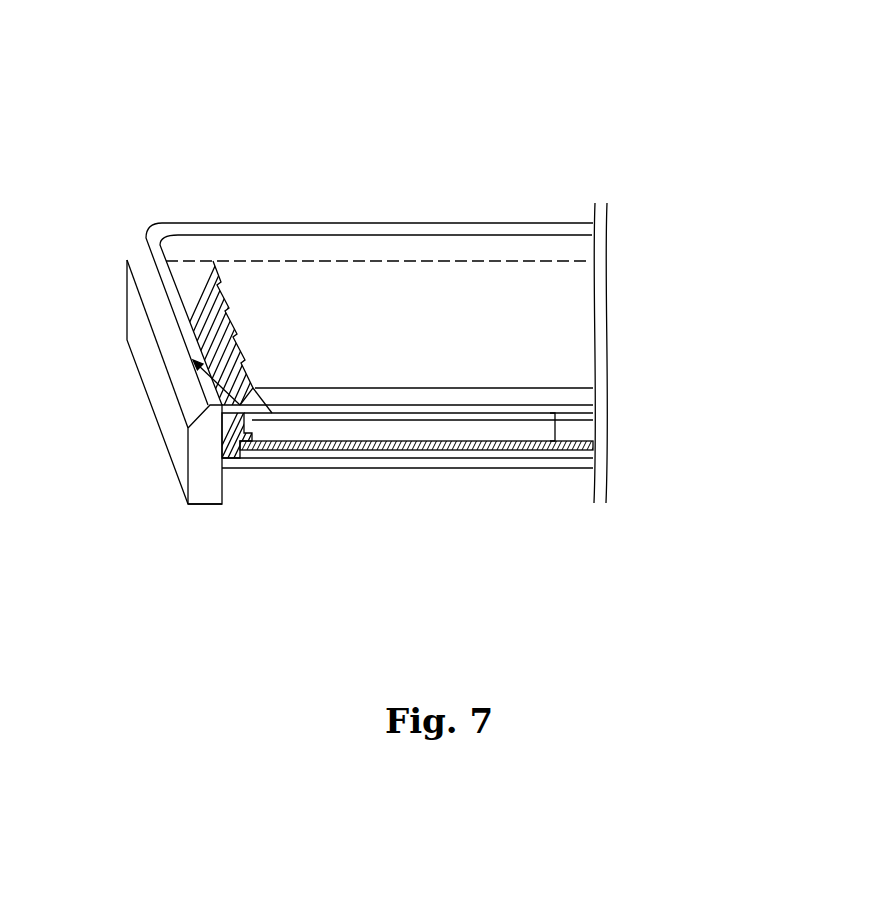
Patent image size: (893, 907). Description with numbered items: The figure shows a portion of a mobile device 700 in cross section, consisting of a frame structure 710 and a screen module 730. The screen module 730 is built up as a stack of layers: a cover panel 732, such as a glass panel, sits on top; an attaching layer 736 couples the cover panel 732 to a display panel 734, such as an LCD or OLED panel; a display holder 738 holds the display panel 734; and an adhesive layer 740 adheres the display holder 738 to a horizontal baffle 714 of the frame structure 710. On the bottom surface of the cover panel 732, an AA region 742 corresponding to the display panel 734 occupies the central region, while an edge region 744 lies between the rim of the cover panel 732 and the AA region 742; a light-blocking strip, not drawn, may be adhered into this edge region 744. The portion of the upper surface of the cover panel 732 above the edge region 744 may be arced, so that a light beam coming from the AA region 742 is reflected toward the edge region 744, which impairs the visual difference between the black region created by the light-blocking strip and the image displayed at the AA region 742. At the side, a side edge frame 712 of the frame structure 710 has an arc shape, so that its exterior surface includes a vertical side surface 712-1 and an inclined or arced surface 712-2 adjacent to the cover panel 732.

The mobile device 700 is at (375, 42).
The frame structure 710 is at (210, 505).
The side edge frame 712 is at (202, 468).
The vertical side surface 712-1 is at (155, 383).
The inclined or arced surface 712-2 is at (147, 267).
The horizontal baffle 714 is at (530, 467).
The screen module 730 is at (490, 235).
The cover panel 732 is at (572, 397).
The display panel 734 is at (555, 427).
The attaching layer 736 is at (446, 410).
The display holder 738 is at (236, 460).
The adhesive layer 740 is at (286, 452).
The AA region 742 is at (397, 302).
The edge region 744 is at (228, 312).